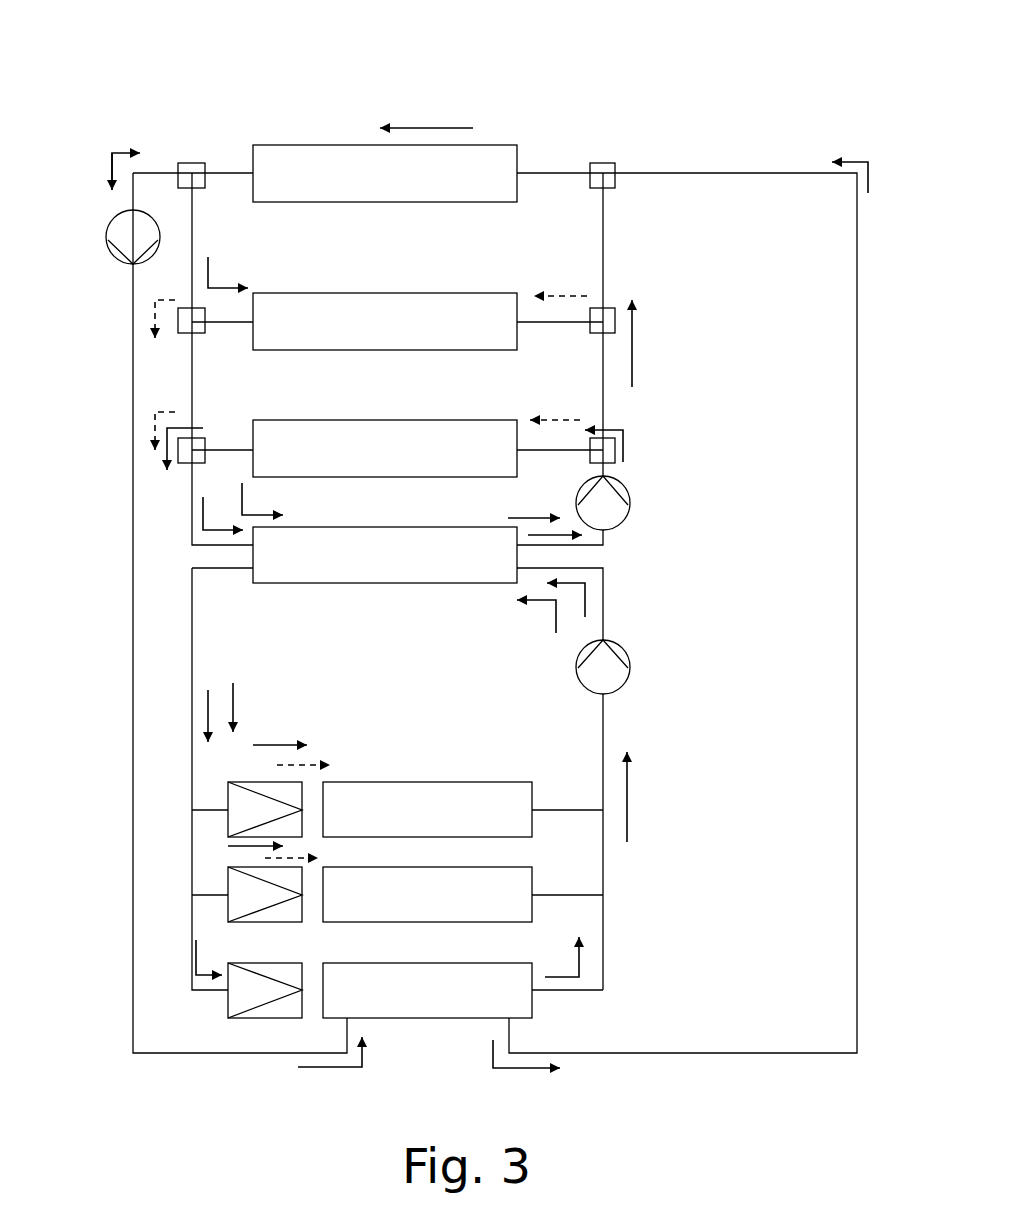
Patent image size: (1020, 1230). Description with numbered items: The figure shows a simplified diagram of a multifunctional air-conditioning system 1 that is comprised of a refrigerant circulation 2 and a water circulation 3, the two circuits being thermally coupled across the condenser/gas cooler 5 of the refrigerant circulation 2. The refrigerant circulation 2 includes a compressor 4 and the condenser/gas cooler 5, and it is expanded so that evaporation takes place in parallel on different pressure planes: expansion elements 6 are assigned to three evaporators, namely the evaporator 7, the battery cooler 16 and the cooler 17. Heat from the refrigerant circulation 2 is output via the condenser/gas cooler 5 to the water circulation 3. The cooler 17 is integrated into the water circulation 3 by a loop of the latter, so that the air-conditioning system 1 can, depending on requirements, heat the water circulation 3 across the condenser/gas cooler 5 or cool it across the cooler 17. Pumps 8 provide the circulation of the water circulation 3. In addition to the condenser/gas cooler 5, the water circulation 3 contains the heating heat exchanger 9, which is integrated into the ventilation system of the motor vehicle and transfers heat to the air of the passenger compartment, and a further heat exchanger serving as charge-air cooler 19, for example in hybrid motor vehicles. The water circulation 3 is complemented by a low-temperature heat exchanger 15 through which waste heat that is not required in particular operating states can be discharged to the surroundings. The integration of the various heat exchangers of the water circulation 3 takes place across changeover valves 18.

The air-conditioning system 1 is at (596, 90).
The refrigerant circulation 2 is at (603, 593).
The water circulation 3 is at (603, 395).
The compressor 4 is at (627, 652).
The condenser/gas cooler 5 is at (370, 527).
The expansion element 6 is at (228, 797).
The evaporator 7 is at (440, 782).
The pump 8 is at (110, 246).
The heating heat exchanger 9 is at (400, 420).
The low-temperature heat exchanger 15 is at (483, 145).
The battery cooler 16 is at (477, 867).
The cooler 17 is at (432, 963).
The changeover valve 18 is at (192, 163).
The charge-air cooler 19 is at (430, 293).